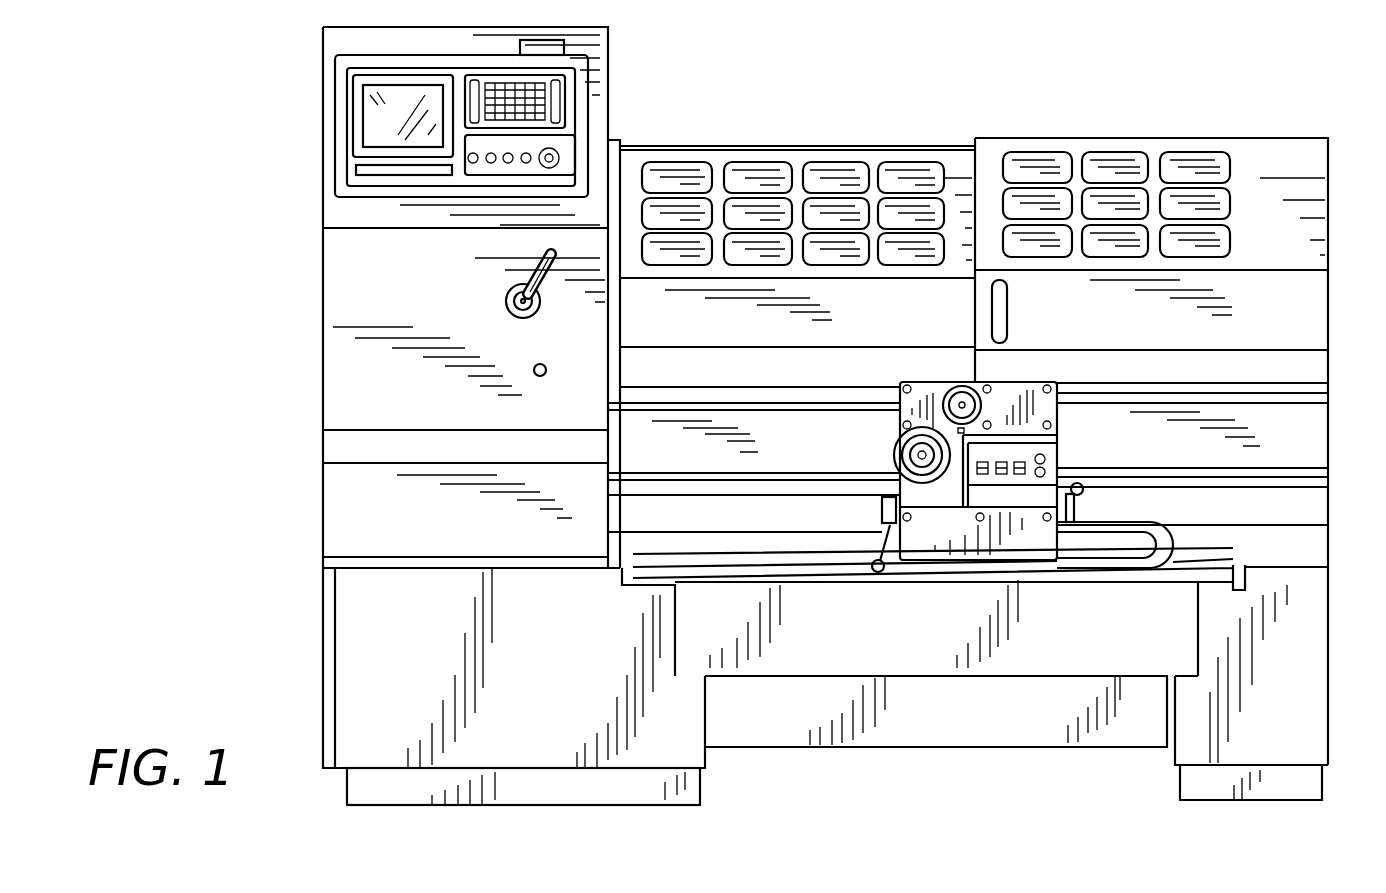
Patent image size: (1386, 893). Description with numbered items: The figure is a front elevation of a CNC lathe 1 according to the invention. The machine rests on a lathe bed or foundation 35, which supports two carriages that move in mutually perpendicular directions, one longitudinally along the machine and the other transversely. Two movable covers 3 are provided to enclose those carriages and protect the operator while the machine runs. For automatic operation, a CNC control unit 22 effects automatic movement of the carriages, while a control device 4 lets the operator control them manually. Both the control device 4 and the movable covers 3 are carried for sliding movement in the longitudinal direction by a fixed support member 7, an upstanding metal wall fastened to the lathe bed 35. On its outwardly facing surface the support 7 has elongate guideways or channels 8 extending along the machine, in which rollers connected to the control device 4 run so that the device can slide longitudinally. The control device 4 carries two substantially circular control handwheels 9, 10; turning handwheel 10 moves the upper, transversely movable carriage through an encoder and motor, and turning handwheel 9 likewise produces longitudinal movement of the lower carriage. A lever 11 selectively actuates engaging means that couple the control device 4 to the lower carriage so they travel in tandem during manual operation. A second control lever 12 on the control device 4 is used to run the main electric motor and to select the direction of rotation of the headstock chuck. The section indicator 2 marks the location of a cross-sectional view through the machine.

The CNC lathe 1 is at (763, 155).
The section line of FIG. 2 is at (1117, 138).
The movable covers 3 is at (920, 150).
The control device 4 is at (1025, 382).
The fixed support member 7 is at (1307, 442).
The guideways 8 is at (1319, 399).
The control handwheel 9 is at (897, 452).
The control handwheel 10 is at (950, 385).
The lever 11 is at (882, 506).
The control lever 12 is at (1082, 497).
The CNC control unit 22 is at (373, 125).
The lathe bed 35 is at (1310, 636).